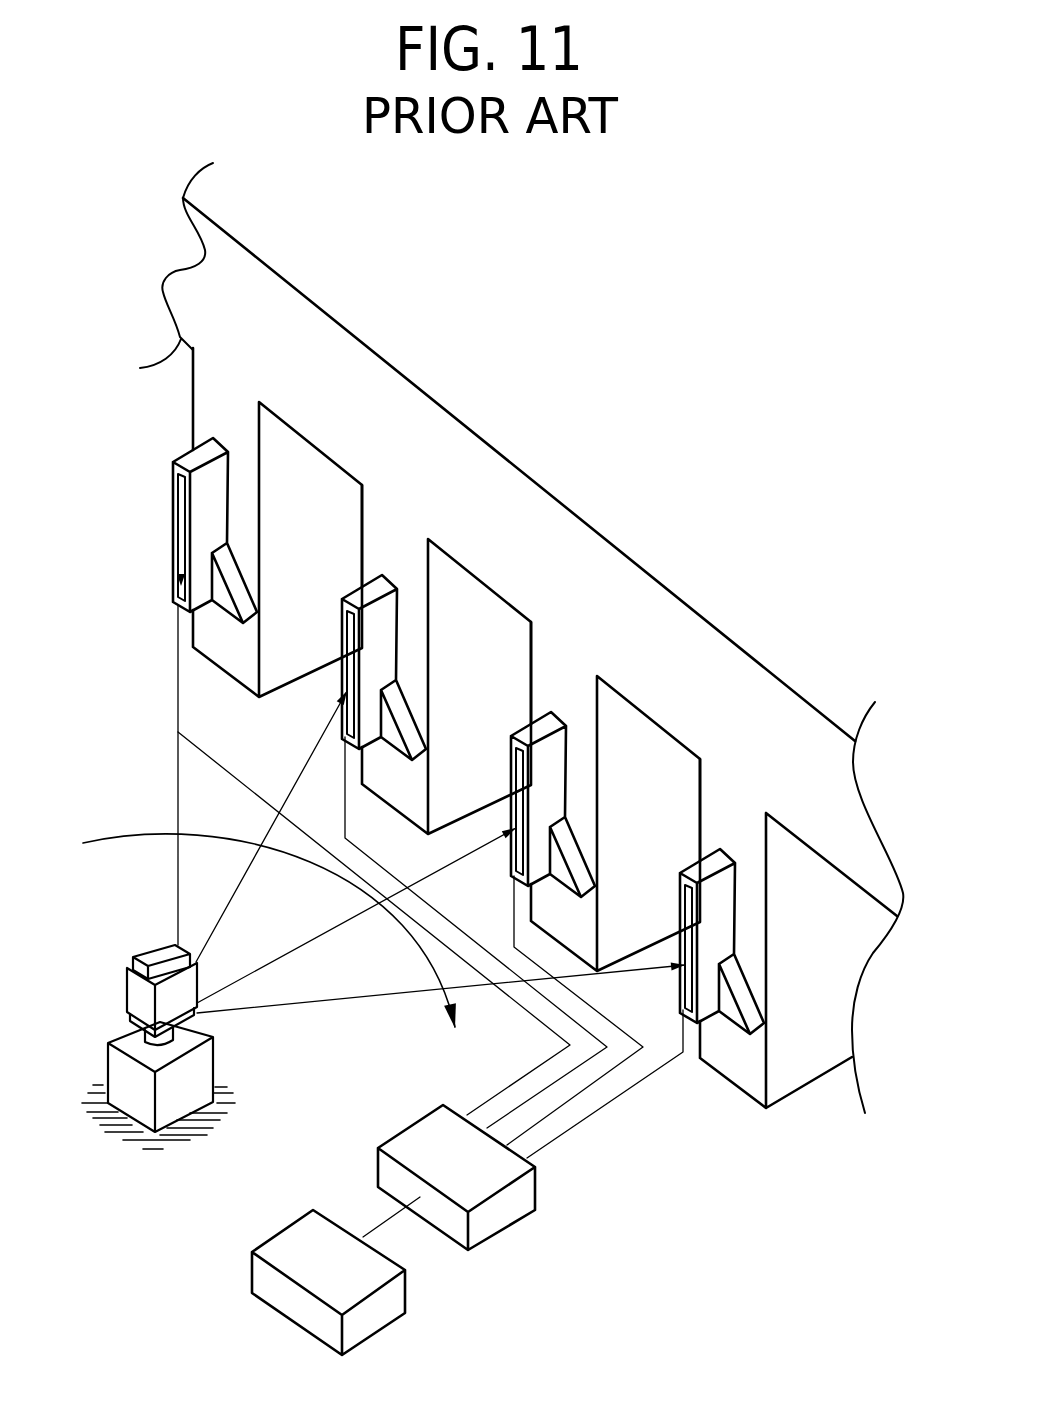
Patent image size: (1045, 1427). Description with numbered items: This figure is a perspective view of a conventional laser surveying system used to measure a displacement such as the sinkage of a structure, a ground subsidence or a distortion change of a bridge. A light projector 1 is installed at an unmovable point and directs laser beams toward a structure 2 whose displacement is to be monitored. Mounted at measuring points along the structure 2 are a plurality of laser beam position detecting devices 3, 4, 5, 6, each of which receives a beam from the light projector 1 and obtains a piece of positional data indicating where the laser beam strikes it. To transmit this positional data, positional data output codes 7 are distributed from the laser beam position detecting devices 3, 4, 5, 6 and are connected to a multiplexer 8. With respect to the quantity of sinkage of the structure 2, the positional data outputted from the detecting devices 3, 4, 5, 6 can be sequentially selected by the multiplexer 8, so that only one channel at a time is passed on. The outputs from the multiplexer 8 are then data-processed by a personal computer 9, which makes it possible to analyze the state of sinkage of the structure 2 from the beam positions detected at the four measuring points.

The light projector 1 is at (132, 989).
The structure 2 is at (612, 562).
The laser beam position detecting device 3 is at (230, 452).
The laser beam position detecting device 4 is at (436, 659).
The laser beam position detecting device 5 is at (605, 796).
The laser beam position detecting device 6 is at (788, 933).
The positional data output codes 7 is at (607, 1106).
The multiplexer 8 is at (497, 1215).
The personal computer 9 is at (380, 1315).